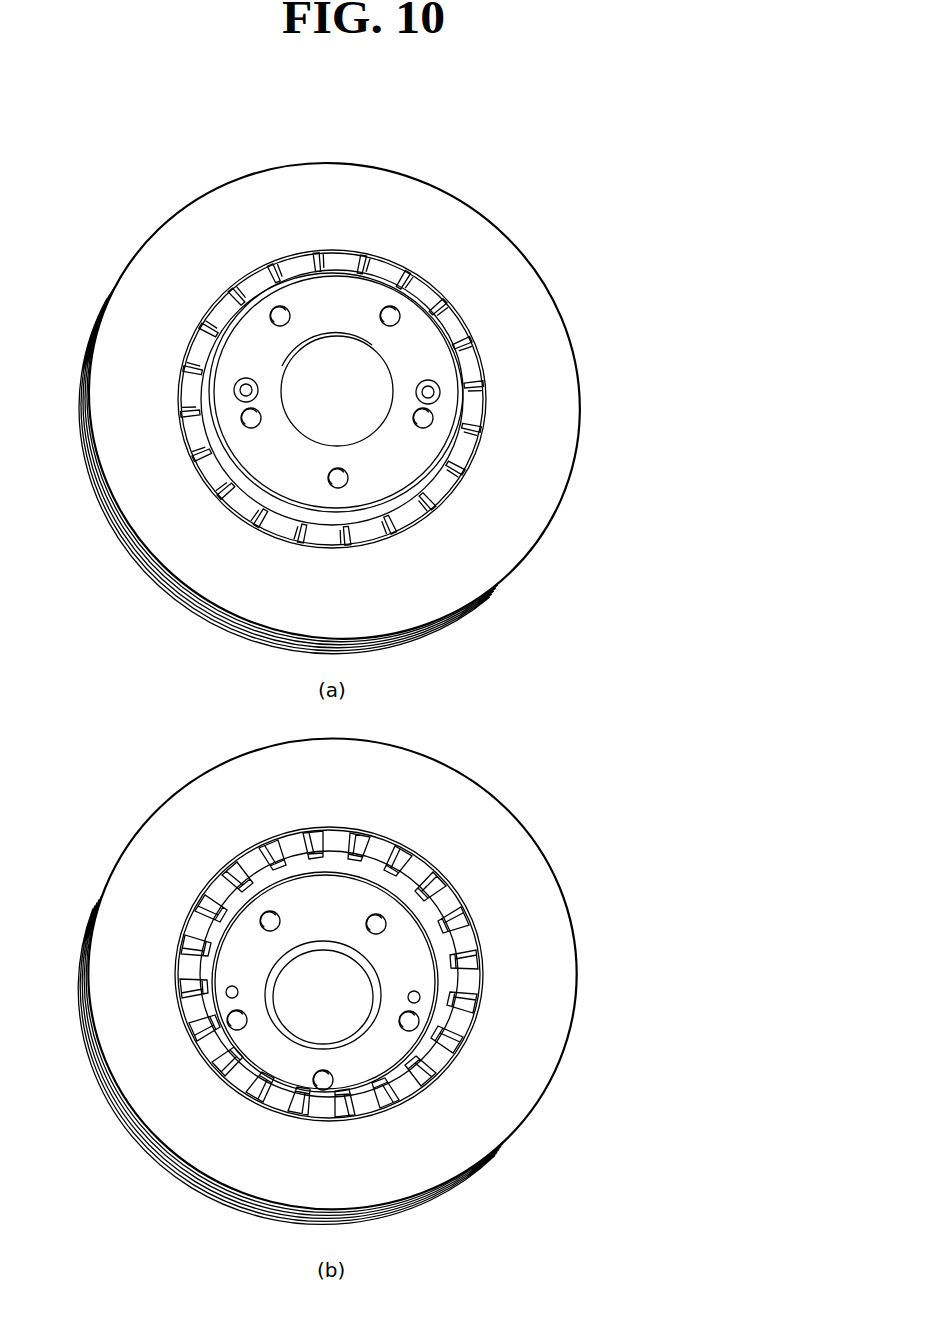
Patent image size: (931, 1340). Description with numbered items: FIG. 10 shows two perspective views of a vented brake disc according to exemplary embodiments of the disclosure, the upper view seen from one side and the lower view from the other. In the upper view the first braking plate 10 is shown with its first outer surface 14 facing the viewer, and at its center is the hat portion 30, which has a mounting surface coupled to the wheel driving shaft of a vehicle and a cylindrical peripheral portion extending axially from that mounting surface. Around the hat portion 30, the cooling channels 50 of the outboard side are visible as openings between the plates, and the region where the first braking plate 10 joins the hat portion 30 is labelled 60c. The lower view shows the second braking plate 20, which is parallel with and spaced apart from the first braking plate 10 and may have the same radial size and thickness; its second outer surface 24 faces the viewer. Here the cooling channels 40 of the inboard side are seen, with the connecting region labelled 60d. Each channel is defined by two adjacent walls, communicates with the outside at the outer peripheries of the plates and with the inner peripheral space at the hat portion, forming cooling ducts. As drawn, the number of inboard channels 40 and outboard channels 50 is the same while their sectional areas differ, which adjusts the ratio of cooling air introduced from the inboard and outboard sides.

The first braking plate 10 is at (495, 222).
The first outer surface 14 is at (512, 290).
The hat portion 30 is at (290, 447).
The cooling channels of the outboard side 50 is at (373, 257).
The vane ring portion of first brake disc 60c is at (470, 403).
The second braking plate 20 is at (481, 783).
The second outer surface 24 is at (517, 893).
The cooling channels of the inboard side 40 is at (445, 1065).
The vane ring portion of second brake disc 60d is at (468, 1003).